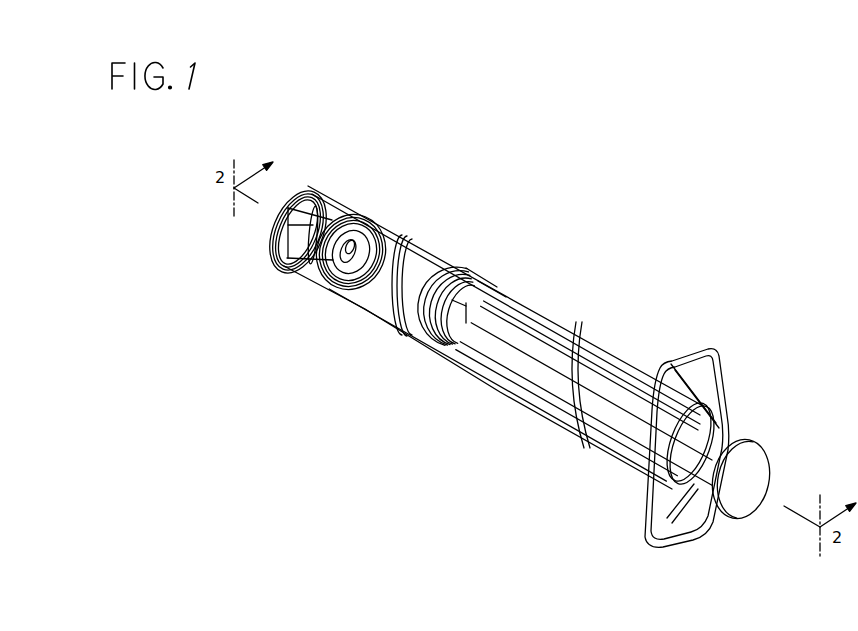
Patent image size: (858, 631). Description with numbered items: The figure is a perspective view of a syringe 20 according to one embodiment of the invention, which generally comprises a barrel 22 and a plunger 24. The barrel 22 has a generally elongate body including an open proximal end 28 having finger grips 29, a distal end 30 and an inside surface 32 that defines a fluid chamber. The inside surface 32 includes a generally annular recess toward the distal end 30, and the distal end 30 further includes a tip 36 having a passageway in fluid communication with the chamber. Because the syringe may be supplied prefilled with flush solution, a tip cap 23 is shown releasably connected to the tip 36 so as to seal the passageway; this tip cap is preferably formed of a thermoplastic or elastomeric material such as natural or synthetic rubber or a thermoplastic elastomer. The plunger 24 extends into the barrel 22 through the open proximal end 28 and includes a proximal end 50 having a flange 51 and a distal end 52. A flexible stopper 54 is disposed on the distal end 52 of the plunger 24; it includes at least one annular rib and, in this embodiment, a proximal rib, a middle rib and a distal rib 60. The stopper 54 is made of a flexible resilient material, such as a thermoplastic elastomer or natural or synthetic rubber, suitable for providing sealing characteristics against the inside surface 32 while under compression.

The syringe 20 is at (350, 469).
The barrel 22 is at (474, 372).
The tip cap 23 is at (261, 252).
The plunger 24 is at (543, 353).
The open proximal end 28 is at (648, 466).
The finger grips 29 is at (700, 347).
The distal end 30 is at (328, 290).
The inside surface 32 is at (384, 306).
The tip 36 is at (382, 232).
The proximal end 50 is at (713, 420).
The flange 51 is at (778, 452).
The distal end 52 is at (493, 292).
The flexible stopper 54 is at (457, 270).
The distal rib 60 is at (418, 262).